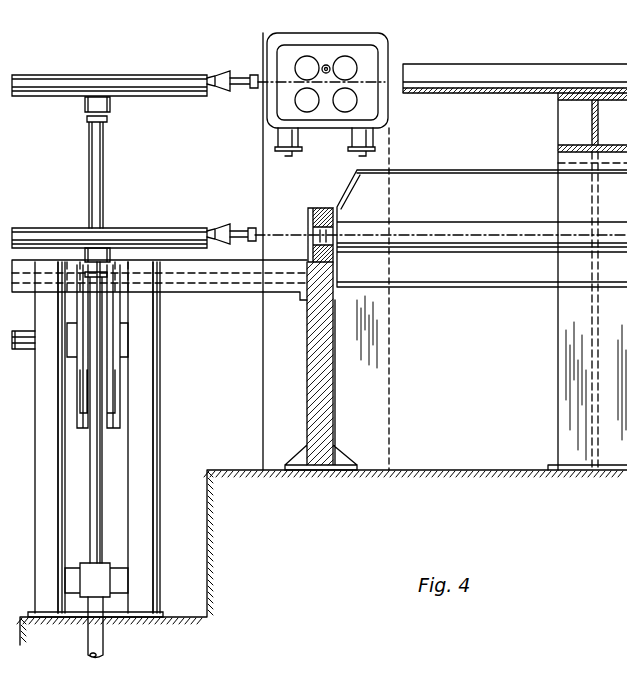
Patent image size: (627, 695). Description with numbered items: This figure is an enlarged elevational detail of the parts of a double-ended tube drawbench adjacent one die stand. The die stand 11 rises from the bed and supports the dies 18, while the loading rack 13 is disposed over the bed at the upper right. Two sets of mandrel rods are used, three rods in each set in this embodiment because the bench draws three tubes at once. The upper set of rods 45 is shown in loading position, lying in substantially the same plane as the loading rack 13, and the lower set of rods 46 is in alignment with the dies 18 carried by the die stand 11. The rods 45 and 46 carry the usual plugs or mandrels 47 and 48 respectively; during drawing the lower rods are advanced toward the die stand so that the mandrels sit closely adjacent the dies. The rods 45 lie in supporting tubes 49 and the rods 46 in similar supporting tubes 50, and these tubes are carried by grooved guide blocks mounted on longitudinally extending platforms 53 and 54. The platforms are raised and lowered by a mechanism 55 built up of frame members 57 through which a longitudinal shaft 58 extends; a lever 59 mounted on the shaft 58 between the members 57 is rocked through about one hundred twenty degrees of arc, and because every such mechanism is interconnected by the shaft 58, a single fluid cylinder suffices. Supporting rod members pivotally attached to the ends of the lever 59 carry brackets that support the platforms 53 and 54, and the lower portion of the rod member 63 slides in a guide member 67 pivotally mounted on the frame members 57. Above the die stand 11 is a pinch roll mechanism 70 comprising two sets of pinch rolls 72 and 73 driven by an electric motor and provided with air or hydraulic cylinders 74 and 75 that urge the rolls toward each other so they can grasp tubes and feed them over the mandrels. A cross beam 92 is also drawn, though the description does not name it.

The die stand 11 is at (326, 388).
The loading rack 13 is at (505, 85).
The dies 18 is at (313, 240).
The upper set of rods 45 is at (233, 71).
The lower set of rods 46 is at (233, 226).
The mandrels 47 is at (250, 76).
The mandrels 48 is at (253, 230).
The supporting tubes 49 is at (103, 80).
The supporting tubes 50 is at (137, 230).
The platform 53 is at (152, 92).
The platform 54 is at (183, 245).
The mechanism 55 is at (164, 404).
The frame members 57 is at (50, 486).
The longitudinal shaft 58 is at (27, 341).
The lever 59 is at (117, 378).
The supporting rod member 63 is at (97, 495).
The guide member 67 is at (122, 582).
The pinch roll mechanism 70 is at (372, 62).
The pinch rolls 72 is at (298, 98).
The pinch rolls 73 is at (358, 100).
The cylinder 74 is at (299, 143).
The cylinder 75 is at (380, 143).
The cross beam 92 is at (228, 288).